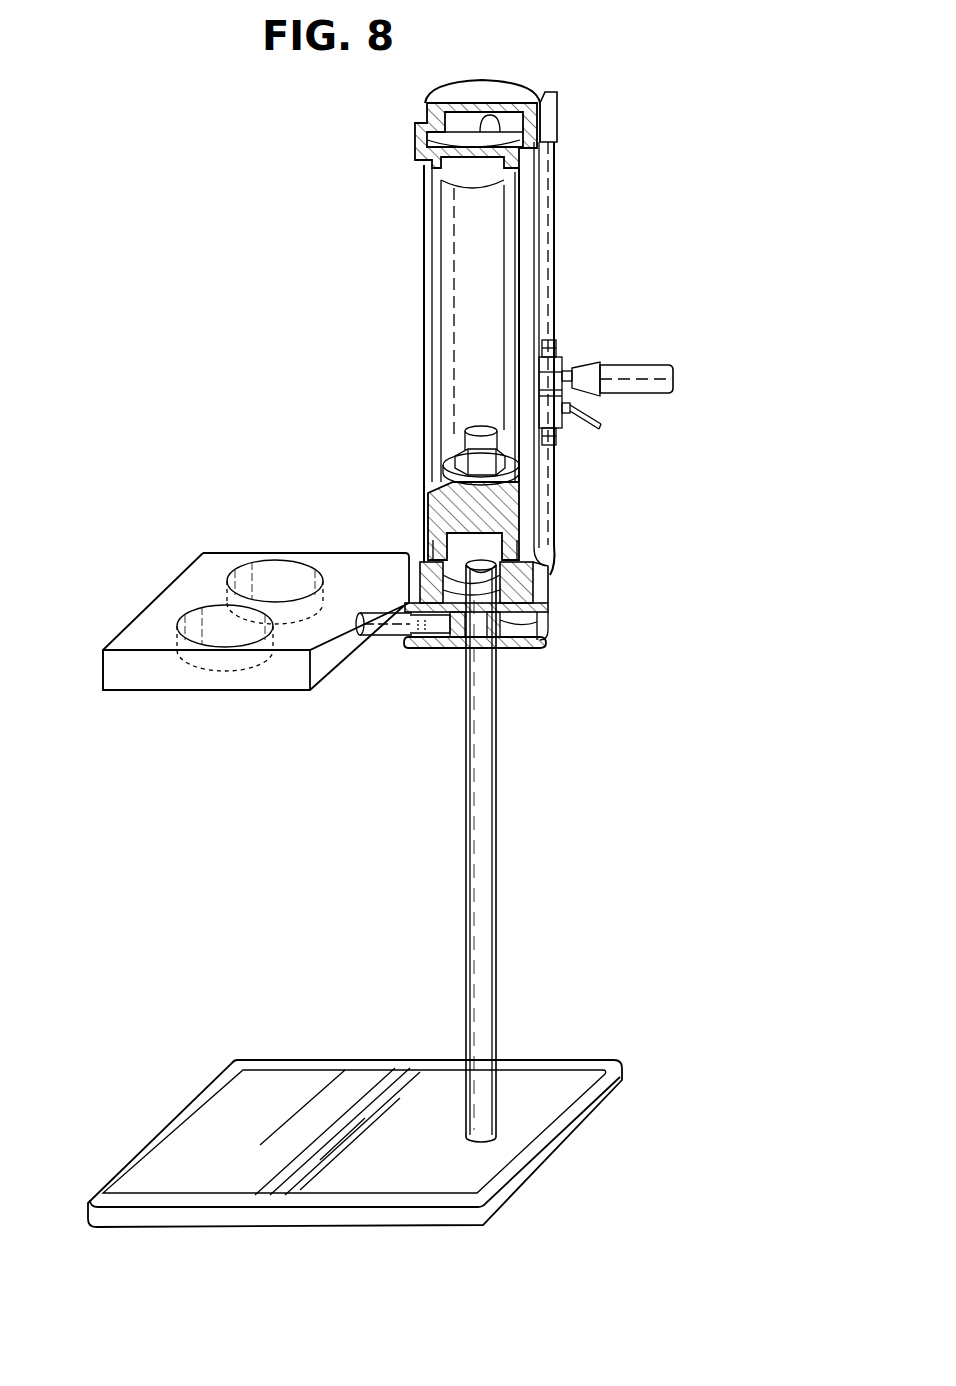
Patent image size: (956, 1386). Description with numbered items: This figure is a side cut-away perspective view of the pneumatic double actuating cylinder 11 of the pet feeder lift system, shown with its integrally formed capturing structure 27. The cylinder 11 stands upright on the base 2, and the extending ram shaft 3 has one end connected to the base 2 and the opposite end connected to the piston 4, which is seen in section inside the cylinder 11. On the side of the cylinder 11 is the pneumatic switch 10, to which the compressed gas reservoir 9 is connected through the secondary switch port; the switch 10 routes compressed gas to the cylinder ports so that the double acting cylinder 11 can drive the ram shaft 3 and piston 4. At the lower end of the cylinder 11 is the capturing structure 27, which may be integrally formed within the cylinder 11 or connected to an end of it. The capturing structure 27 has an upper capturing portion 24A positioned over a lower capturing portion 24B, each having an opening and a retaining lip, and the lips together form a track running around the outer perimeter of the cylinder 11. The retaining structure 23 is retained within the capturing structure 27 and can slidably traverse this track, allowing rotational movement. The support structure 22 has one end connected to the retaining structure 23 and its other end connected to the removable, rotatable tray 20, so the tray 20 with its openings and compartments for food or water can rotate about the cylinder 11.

The base 2 is at (187, 1228).
The ram shaft 3 is at (468, 915).
The piston 4 is at (440, 510).
The compressed gas reservoir 9 is at (648, 366).
The pneumatic switch 10 is at (602, 428).
The pneumatic double actuating cylinder 11 is at (424, 304).
The rotatable tray 20 is at (103, 672).
The support structure 22 is at (375, 630).
The retaining structure 23 is at (428, 640).
The upper capturing portion 24A is at (550, 595).
The lower capturing portion 24B is at (548, 640).
The capturing structure 27 is at (570, 608).